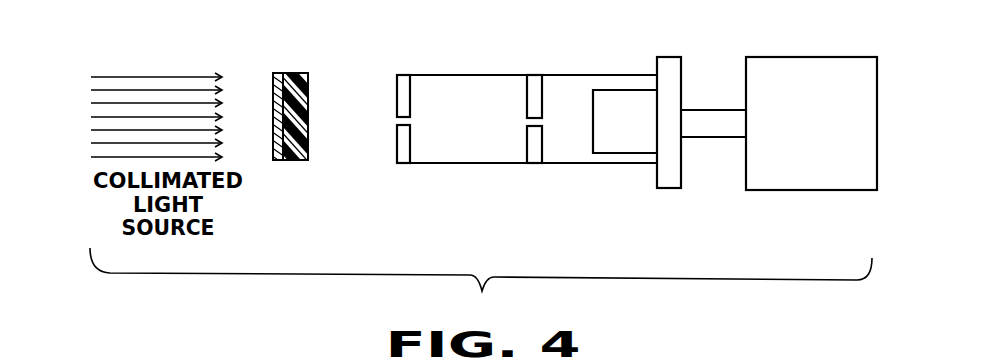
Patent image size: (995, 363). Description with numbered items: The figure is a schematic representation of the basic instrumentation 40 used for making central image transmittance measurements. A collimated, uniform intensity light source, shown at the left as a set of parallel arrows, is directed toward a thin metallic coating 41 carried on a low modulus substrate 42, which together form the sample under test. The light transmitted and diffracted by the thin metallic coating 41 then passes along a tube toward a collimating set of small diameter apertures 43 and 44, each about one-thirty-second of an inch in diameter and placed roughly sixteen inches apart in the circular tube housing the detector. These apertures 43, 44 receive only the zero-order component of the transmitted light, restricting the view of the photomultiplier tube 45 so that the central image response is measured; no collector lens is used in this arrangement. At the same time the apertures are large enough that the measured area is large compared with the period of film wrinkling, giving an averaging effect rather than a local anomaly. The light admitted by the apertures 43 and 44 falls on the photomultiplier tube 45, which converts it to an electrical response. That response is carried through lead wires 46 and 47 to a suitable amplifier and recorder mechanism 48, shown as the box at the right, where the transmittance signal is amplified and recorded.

The basic instrumentation 40 is at (287, 111).
The thin metallic coating 41 is at (277, 160).
The low modulus substrate 42 is at (308, 160).
The aperture 43 is at (397, 105).
The aperture 44 is at (527, 101).
The photomultiplier tube 45 is at (613, 131).
The lead wire 46 is at (710, 109).
The lead wire 47 is at (718, 140).
The amplifier and recorder mechanism 48 is at (795, 138).